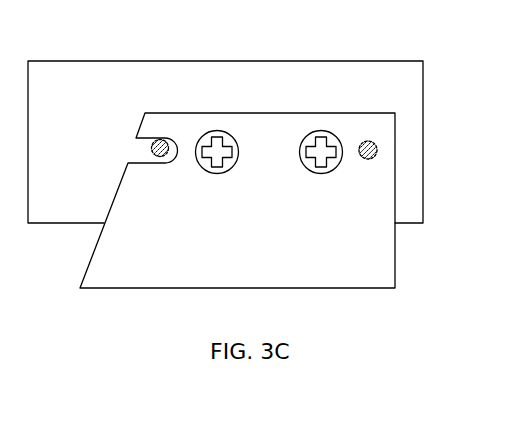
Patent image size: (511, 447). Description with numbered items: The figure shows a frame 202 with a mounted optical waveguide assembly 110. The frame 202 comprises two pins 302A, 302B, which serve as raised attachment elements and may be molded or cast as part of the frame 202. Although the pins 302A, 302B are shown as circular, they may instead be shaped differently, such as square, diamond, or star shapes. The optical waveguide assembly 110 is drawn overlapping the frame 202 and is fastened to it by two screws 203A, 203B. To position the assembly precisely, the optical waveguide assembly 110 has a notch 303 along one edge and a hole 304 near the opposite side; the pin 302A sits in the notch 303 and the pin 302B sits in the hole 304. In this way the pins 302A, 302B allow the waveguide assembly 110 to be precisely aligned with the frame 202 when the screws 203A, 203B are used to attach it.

The optical waveguide assembly 110 is at (244, 240).
The frame 202 is at (247, 61).
The screw 203A is at (217, 131).
The screw 203B is at (321, 131).
The pin 302A is at (155, 143).
The pin 302B is at (375, 143).
The notch 303 is at (131, 164).
The hole 304 is at (367, 160).